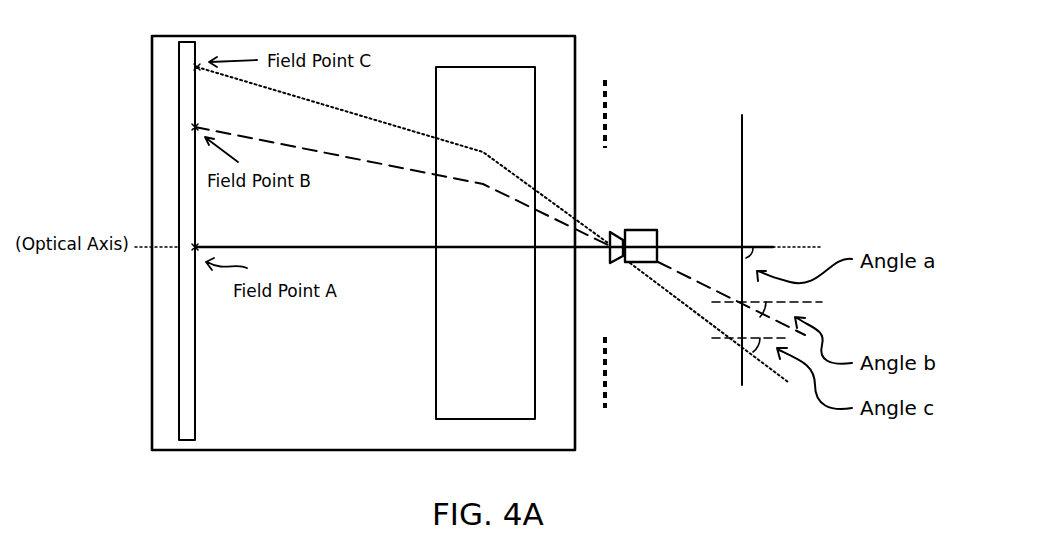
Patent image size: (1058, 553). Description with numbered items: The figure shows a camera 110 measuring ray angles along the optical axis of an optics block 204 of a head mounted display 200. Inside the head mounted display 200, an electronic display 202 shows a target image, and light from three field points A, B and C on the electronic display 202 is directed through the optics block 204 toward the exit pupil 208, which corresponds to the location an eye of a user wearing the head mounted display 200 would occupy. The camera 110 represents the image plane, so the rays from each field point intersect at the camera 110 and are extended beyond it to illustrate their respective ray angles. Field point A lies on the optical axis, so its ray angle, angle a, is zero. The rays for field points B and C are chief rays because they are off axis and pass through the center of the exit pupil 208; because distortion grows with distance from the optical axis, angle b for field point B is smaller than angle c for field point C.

The head mounted display 200 is at (152, 432).
The electronic display 202 is at (182, 49).
The optics block 204 is at (523, 98).
The camera 110 is at (652, 228).
The exit pupil 208 is at (607, 367).